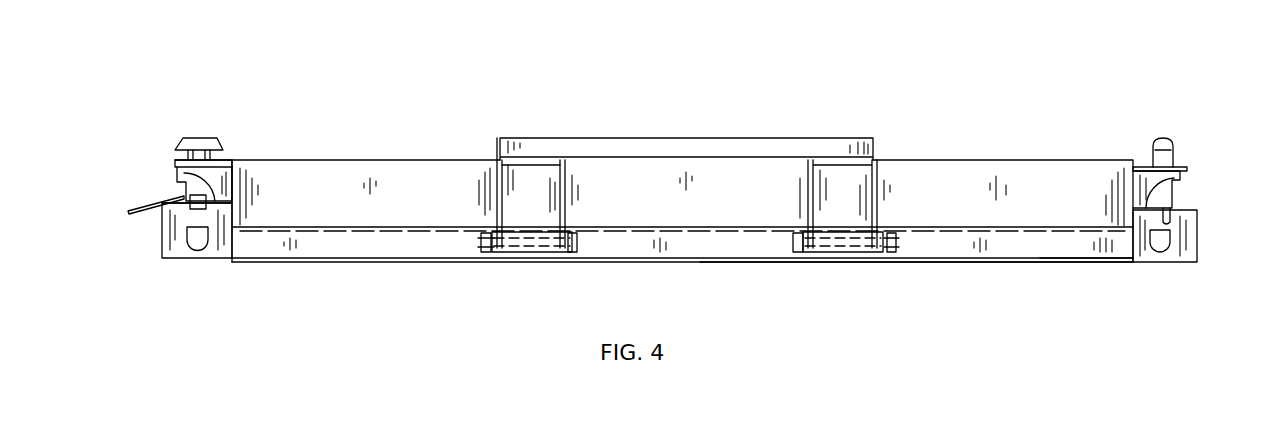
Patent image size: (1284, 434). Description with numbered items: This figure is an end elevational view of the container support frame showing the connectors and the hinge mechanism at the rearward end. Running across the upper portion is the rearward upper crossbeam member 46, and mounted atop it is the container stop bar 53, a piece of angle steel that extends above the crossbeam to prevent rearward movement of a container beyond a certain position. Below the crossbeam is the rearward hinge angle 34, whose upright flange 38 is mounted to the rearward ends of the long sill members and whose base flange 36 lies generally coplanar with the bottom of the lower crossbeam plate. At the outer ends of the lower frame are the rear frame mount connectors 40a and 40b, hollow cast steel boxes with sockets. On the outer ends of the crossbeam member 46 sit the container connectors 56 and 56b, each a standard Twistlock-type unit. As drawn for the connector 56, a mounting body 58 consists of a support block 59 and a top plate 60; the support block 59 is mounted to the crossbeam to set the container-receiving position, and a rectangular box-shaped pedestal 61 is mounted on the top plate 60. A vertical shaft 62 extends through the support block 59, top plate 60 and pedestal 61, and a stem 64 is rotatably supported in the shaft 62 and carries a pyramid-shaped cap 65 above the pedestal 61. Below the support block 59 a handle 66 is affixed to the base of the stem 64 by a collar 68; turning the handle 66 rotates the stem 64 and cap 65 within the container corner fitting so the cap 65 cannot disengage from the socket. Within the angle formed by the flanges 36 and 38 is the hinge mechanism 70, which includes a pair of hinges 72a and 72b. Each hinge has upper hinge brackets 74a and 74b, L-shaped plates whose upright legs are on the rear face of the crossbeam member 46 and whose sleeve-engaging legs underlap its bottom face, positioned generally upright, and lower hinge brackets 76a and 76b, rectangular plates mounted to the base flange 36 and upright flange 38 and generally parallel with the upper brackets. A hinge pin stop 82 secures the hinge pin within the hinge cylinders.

The rearward hinge angle 34 is at (1008, 248).
The base flange 36 is at (938, 266).
The upright flange 38 is at (1078, 262).
The rear frame mount connector 40a is at (168, 257).
The rear frame mount connector 40b is at (1187, 240).
The rearward upper crossbeam member 46 is at (972, 177).
The container stop bar 53 is at (728, 147).
The container connector 56 is at (168, 128).
The container connector 56b is at (1160, 178).
The mounting body 58 is at (228, 186).
The support block 59 is at (180, 170).
The top plate 60 is at (218, 166).
The pedestal 61 is at (190, 156).
The vertical shaft 62 is at (163, 240).
The stem 64 is at (212, 135).
The pyramid-shaped cap 65 is at (197, 150).
The handle 66 is at (130, 211).
The collar 68 is at (197, 197).
The hinge mechanism 70 is at (521, 225).
The hinge 72a is at (526, 190).
The hinge 72b is at (848, 172).
The upper hinge bracket 74a is at (495, 198).
The upper hinge bracket 74b is at (563, 203).
The lower hinge bracket 76a is at (492, 236).
The lower hinge bracket 76b is at (580, 235).
The hinge pin stop 82 is at (478, 246).